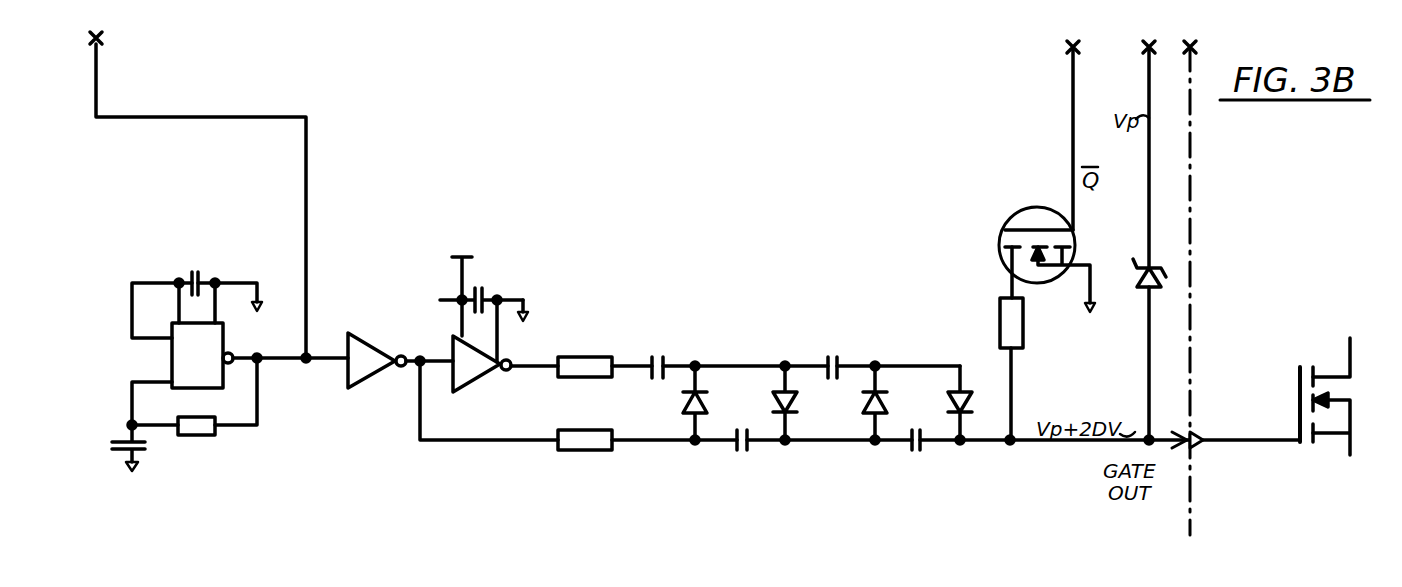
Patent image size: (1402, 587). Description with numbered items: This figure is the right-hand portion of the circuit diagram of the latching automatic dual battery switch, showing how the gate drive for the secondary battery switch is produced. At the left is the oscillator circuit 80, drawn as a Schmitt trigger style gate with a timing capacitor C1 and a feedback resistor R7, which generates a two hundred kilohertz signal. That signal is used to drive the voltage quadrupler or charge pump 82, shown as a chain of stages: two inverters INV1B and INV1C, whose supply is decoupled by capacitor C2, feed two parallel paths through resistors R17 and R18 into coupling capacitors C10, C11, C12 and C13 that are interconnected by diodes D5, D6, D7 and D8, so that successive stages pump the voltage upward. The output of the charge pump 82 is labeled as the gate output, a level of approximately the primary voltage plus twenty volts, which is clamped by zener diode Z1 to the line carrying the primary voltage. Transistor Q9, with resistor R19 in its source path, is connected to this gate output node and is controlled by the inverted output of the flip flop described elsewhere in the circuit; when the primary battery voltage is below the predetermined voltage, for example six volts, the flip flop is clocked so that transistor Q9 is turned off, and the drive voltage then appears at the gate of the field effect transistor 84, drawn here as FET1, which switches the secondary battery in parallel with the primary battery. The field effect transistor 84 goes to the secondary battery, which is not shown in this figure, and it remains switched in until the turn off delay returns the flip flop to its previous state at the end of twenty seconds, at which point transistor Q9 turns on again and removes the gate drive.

The oscillator circuit 80 is at (303, 488).
The voltage quadrupler or charge pump 82 is at (997, 483).
The field effect transistor 84 is at (1331, 448).
The capacitor C1 is at (197, 269).
The resistor R7 is at (192, 414).
The inverter INV1B is at (368, 348).
The inverter INV1C is at (473, 375).
The capacitor C2 is at (481, 287).
The resistor R17 is at (585, 354).
The resistor R18 is at (585, 428).
The capacitor C10 is at (655, 354).
The capacitor C11 is at (827, 354).
The capacitor C12 is at (726, 452).
The capacitor C13 is at (909, 453).
The diode D5 is at (671, 403).
The diode D6 is at (767, 403).
The diode D7 is at (852, 403).
The diode D8 is at (938, 403).
The resistor R19 is at (982, 323).
The transistor Q9 is at (1027, 248).
The zener diode Z1 is at (1158, 291).
The power FET FET1 is at (1286, 396).